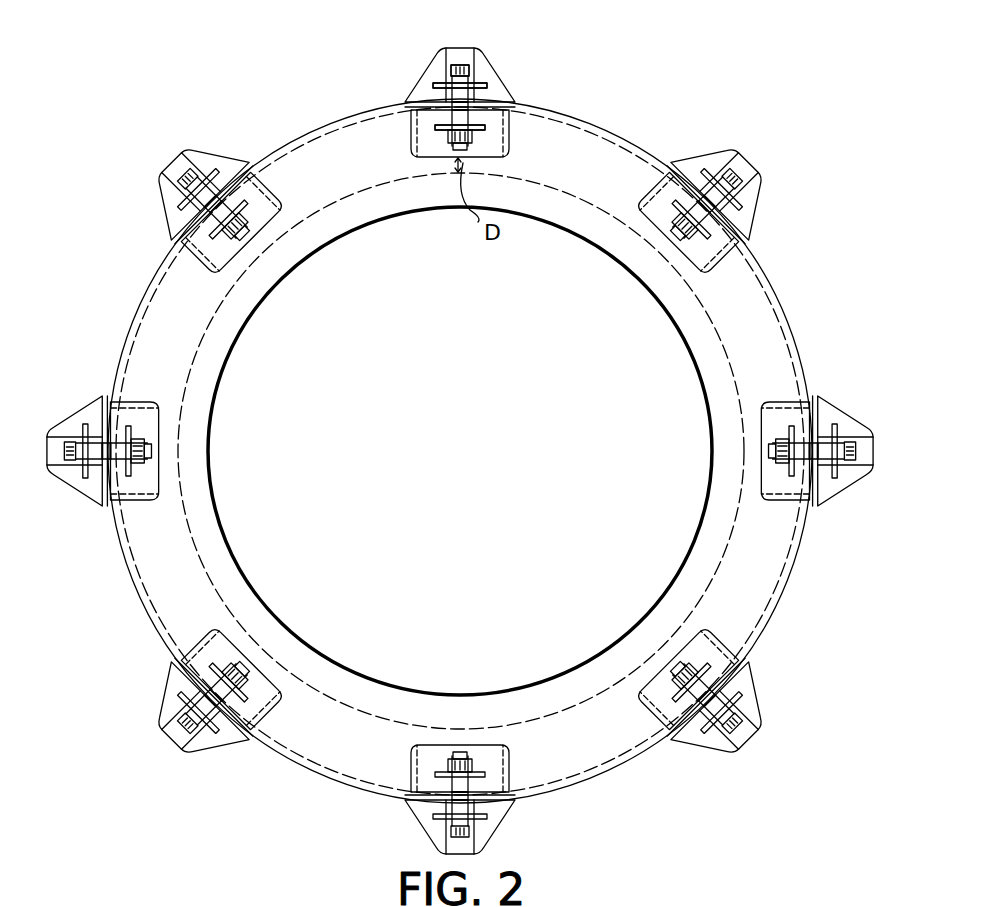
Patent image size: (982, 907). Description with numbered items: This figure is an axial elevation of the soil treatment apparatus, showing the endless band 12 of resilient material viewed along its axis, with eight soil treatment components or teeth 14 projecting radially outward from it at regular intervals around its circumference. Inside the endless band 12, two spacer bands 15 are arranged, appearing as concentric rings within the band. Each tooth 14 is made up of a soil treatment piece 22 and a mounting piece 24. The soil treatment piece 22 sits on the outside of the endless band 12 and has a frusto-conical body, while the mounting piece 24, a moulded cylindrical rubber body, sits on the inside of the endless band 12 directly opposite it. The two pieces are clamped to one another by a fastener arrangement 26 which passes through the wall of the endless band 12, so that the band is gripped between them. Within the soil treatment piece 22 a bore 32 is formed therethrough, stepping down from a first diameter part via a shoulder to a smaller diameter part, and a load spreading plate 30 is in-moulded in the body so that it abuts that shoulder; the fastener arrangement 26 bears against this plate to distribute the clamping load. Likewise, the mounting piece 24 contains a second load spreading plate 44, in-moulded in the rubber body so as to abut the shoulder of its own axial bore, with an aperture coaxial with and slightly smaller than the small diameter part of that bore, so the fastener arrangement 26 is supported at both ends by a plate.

The endless band 12 is at (780, 292).
The soil treatment component 14 is at (727, 155).
The spacer band 15 is at (708, 362).
The soil treatment piece 22 is at (437, 52).
The mounting piece 24 is at (508, 133).
The fastener arrangement 26 is at (478, 72).
The load spreading plate 30 is at (498, 78).
The bore 32 is at (464, 40).
The load spreading plate 44 is at (412, 128).